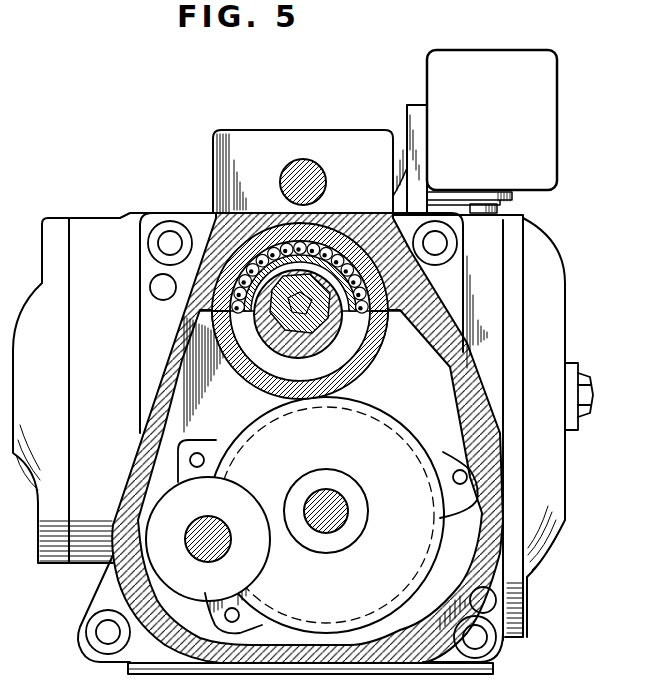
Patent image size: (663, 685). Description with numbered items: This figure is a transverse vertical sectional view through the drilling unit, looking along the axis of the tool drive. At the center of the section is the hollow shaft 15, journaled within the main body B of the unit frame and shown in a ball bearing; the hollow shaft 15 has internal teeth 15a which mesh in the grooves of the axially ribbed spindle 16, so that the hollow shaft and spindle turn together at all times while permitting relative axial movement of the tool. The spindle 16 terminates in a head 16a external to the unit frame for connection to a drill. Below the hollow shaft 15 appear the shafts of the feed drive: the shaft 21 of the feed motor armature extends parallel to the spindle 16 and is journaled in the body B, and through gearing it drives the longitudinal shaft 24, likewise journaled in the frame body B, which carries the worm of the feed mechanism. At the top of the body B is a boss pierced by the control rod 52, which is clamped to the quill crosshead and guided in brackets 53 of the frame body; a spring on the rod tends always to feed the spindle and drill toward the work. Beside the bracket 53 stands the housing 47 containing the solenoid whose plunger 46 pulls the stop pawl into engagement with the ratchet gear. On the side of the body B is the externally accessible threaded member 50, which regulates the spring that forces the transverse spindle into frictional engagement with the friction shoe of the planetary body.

The main body B is at (213, 182).
The hollow shaft 15 is at (291, 348).
The internal teeth 15a is at (333, 340).
The spindle 16 is at (350, 323).
The head 16a is at (343, 330).
The shaft 21 is at (347, 507).
The longitudinal shaft 24 is at (220, 525).
The plunger 46 is at (497, 213).
The housing 47 is at (525, 68).
The threaded member 50 is at (597, 397).
The control rod 52 is at (308, 160).
The brackets 53 is at (367, 147).